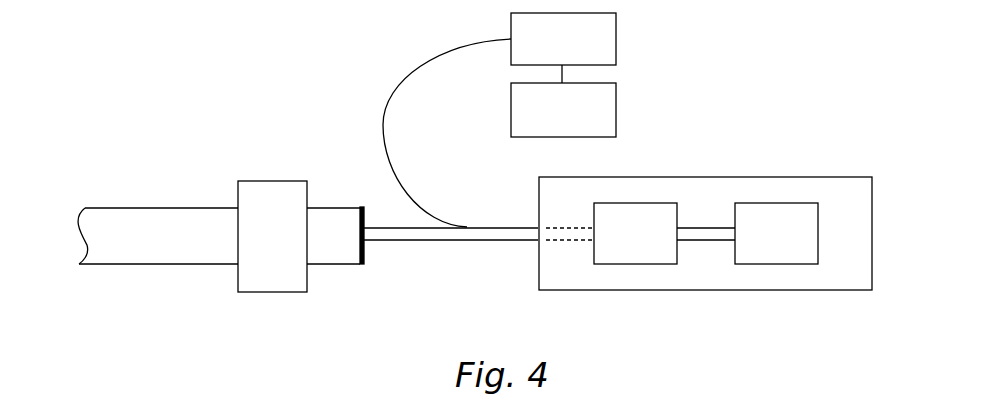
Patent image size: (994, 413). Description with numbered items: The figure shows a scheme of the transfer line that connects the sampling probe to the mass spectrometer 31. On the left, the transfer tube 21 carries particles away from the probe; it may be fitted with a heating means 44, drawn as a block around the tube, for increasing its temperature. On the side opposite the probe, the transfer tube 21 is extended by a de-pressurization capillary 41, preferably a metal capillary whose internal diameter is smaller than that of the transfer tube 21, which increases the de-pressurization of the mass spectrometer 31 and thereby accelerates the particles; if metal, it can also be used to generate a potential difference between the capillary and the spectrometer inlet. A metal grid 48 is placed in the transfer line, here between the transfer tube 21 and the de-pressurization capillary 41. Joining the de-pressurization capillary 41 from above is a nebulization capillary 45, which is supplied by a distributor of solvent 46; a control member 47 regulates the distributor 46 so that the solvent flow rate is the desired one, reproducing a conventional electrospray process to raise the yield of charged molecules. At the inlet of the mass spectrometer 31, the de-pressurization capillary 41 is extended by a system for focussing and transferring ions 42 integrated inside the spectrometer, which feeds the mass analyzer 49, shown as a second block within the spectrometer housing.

The transfer tube 21 is at (137, 245).
The heating means 44 is at (270, 273).
The metal grid 48 is at (360, 238).
The de-pressurization capillary 41 is at (493, 241).
The mass spectrometer 31 is at (848, 193).
The system for focussing and transferring ions 42 is at (633, 248).
The mass analyzer 49 is at (778, 247).
The nebulization capillary 45 is at (410, 67).
The distributor of solvent 46 is at (594, 43).
The control member 47 is at (594, 114).